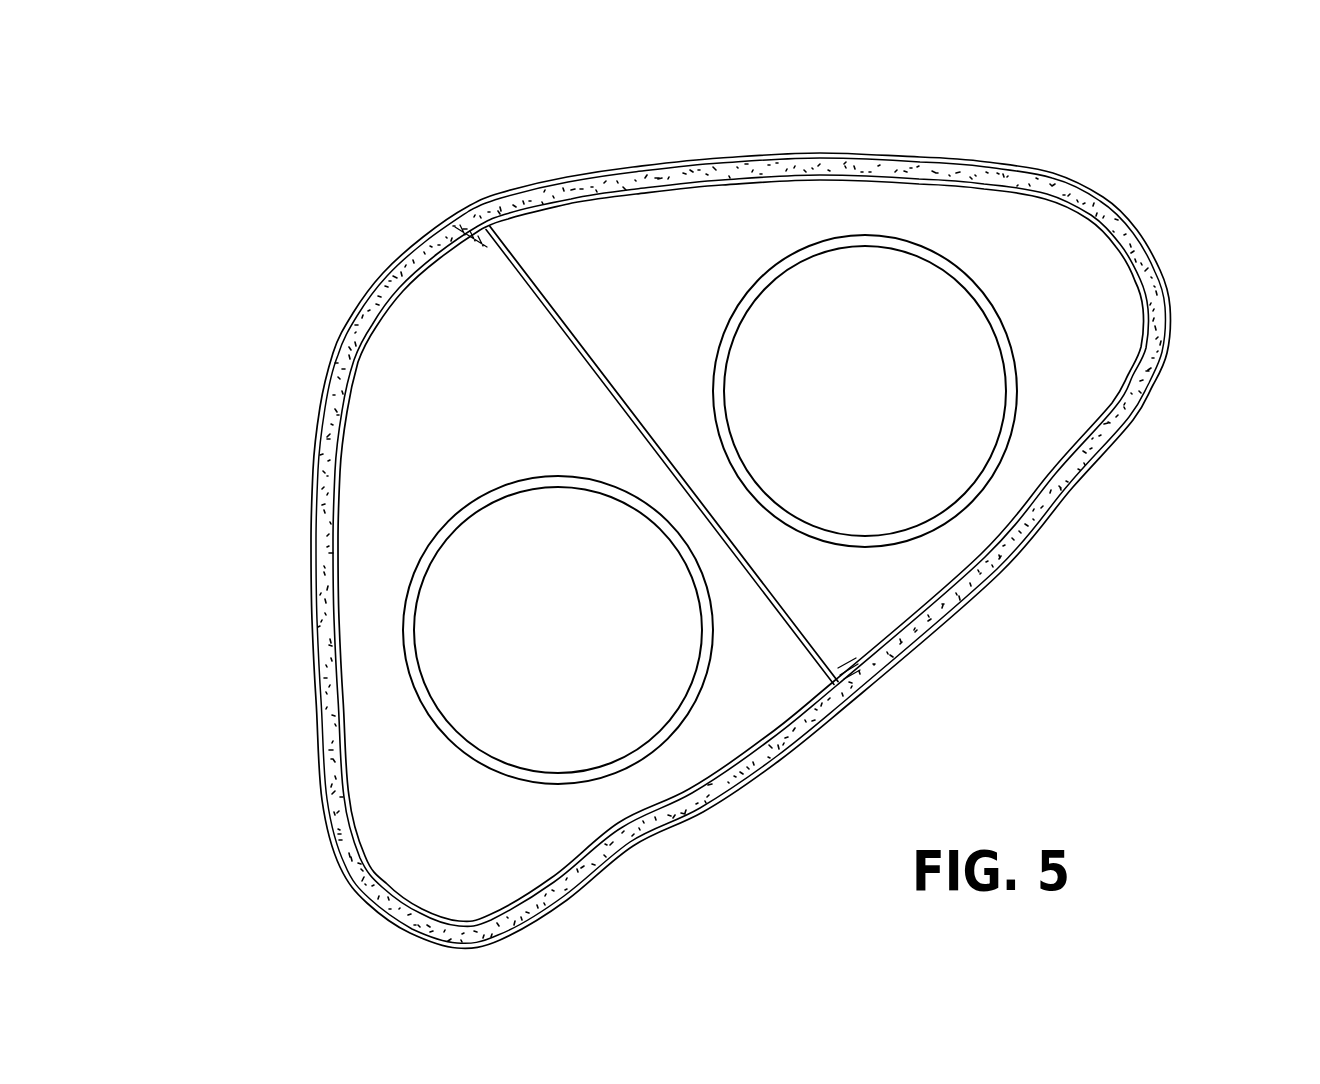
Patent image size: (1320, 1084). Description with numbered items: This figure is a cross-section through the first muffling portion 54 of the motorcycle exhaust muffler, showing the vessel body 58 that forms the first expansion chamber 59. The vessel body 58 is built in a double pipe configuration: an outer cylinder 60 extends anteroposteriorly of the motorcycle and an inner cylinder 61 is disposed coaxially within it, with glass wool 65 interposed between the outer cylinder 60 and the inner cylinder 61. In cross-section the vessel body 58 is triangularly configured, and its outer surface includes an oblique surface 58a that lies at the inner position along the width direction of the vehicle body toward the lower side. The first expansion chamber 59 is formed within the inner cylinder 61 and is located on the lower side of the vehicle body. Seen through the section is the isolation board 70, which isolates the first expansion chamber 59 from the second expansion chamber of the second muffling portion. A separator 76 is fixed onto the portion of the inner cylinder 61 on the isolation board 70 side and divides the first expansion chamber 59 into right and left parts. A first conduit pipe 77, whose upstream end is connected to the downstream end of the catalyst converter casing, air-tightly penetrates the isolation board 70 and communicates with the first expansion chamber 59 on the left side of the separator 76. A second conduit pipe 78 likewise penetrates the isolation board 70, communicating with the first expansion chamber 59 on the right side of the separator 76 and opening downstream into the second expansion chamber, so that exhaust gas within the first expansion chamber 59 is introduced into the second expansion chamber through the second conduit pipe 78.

The first muffling portion 54 is at (306, 406).
The vessel body 58 is at (668, 165).
The oblique surface 58a is at (898, 655).
The first expansion chamber 59 is at (672, 296).
The outer cylinder 60 is at (873, 158).
The inner cylinder 61 is at (1013, 164).
The glass wool 65 is at (763, 176).
The isolation board 70 is at (1077, 387).
The separator 76 is at (593, 371).
The first conduit pipe 77 is at (995, 305).
The second conduit pipe 78 is at (443, 523).